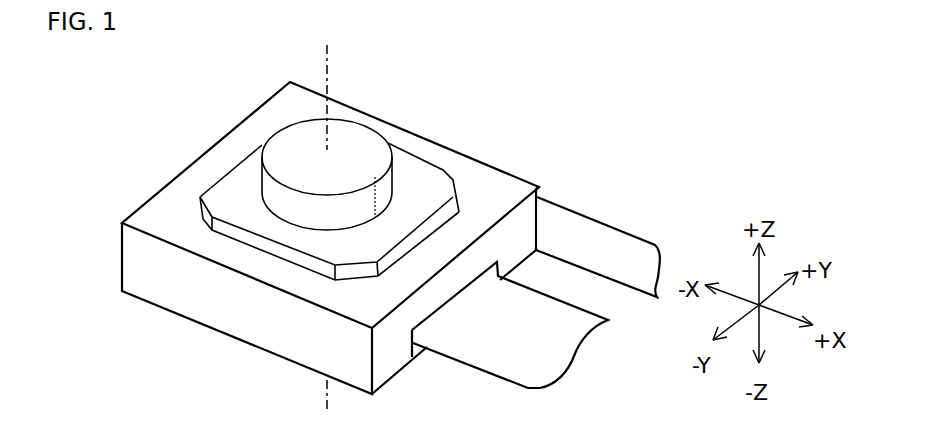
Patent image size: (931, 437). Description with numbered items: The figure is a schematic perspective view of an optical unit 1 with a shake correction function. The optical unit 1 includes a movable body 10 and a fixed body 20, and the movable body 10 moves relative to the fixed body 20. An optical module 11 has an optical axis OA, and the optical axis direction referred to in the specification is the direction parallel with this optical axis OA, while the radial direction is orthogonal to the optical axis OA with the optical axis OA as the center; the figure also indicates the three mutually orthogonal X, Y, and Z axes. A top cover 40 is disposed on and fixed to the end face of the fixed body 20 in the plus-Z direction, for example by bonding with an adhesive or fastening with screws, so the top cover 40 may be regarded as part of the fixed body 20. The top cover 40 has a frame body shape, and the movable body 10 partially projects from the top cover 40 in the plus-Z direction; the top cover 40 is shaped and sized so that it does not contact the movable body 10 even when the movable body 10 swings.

The optical unit with a shake correction function 1 is at (560, 127).
The movable body 10 is at (248, 153).
The optical module 11 is at (420, 177).
The fixed body 20 is at (213, 303).
The top cover 40 is at (165, 207).
The optical axis OA is at (328, 72).